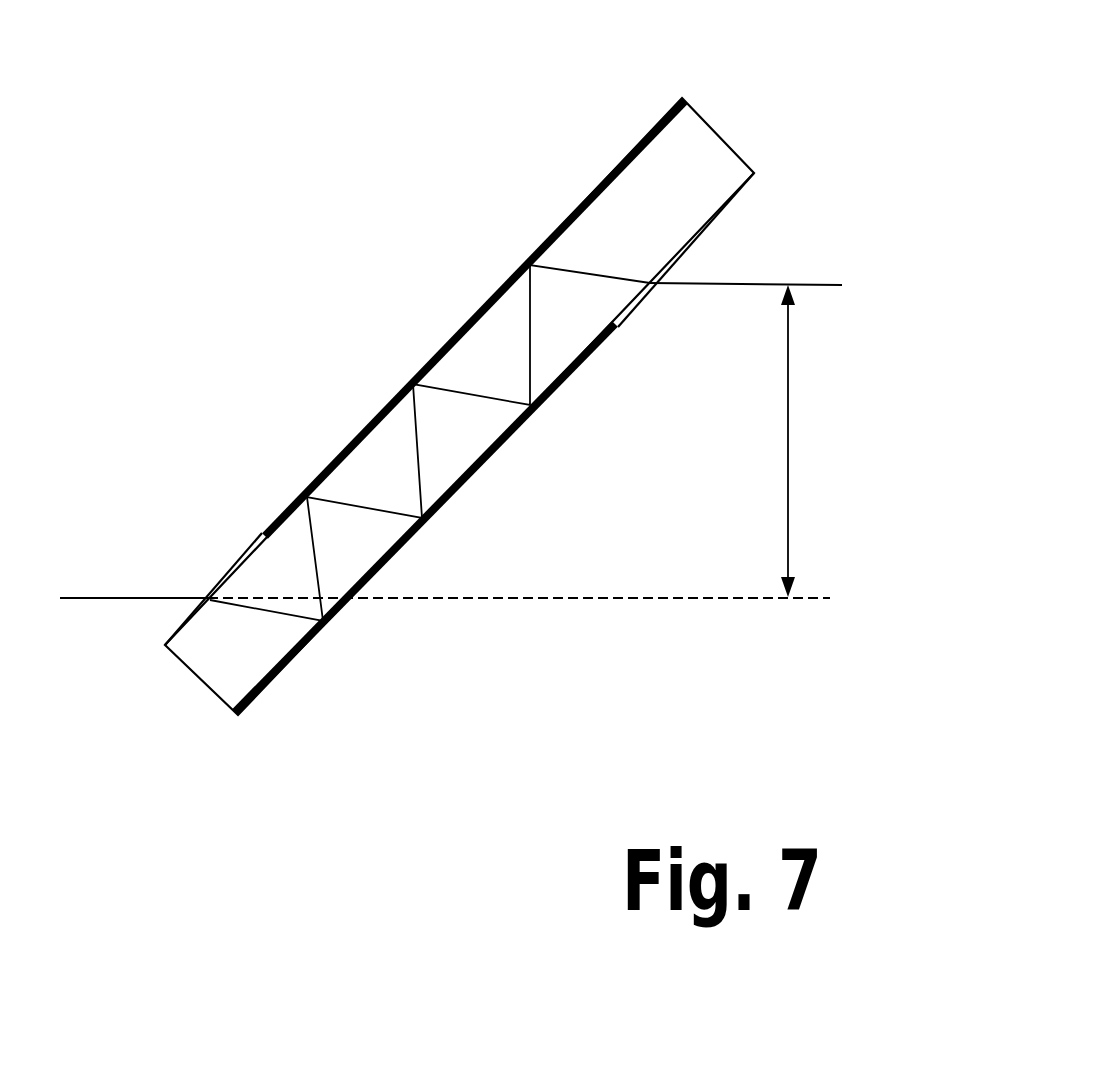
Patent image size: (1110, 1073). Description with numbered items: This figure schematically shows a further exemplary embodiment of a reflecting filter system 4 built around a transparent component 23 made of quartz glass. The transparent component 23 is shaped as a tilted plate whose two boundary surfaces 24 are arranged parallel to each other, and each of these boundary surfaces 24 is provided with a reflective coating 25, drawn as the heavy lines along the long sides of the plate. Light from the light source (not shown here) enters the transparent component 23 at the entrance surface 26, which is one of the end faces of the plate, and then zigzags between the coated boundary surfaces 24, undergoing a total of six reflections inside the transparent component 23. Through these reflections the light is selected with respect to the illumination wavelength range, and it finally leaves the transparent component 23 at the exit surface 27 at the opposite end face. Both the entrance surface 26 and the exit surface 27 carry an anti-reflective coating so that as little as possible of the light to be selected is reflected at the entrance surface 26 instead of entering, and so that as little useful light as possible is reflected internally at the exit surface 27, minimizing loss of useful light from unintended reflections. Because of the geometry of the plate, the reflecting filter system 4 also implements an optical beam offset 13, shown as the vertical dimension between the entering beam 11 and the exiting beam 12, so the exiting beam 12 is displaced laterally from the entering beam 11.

The reflecting filter system 4 is at (283, 371).
The entering beam 11 is at (797, 284).
The exiting beam 12 is at (167, 598).
The optical beam offset 13 is at (788, 382).
The transparent component 23 is at (680, 197).
The boundary surfaces 24 is at (457, 330).
The reflective coating 25 is at (293, 663).
The entrance surface 26 is at (714, 245).
The exit surface 27 is at (217, 558).